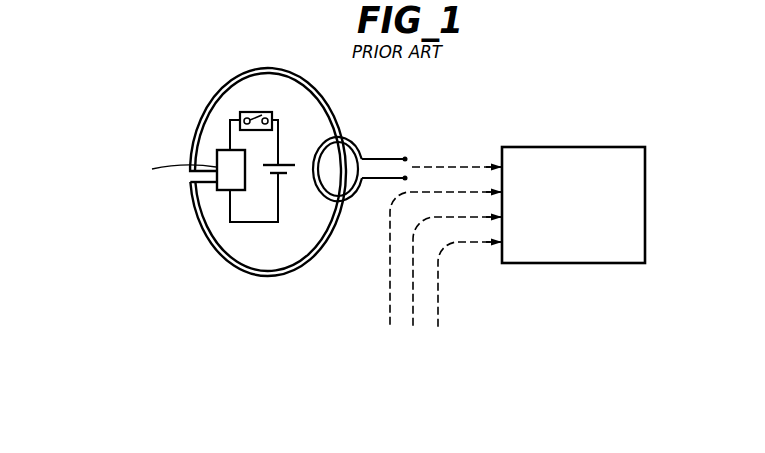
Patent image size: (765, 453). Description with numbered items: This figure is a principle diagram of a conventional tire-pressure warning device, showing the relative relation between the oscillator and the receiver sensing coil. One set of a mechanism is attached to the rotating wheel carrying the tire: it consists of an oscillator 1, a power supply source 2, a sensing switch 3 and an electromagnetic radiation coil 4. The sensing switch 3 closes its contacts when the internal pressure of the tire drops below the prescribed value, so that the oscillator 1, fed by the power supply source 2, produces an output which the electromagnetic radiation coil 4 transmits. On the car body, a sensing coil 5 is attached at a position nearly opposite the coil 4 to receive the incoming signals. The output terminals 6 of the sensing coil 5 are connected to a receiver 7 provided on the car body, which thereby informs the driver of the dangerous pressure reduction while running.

The oscillator 1 is at (217, 188).
The power supply source 2 is at (284, 175).
The sensing switch 3 is at (242, 112).
The electromagnetic radiation coil 4 is at (337, 117).
The sensing coil 5 is at (360, 145).
The output terminals 6 is at (447, 165).
The receiver 7 is at (545, 148).